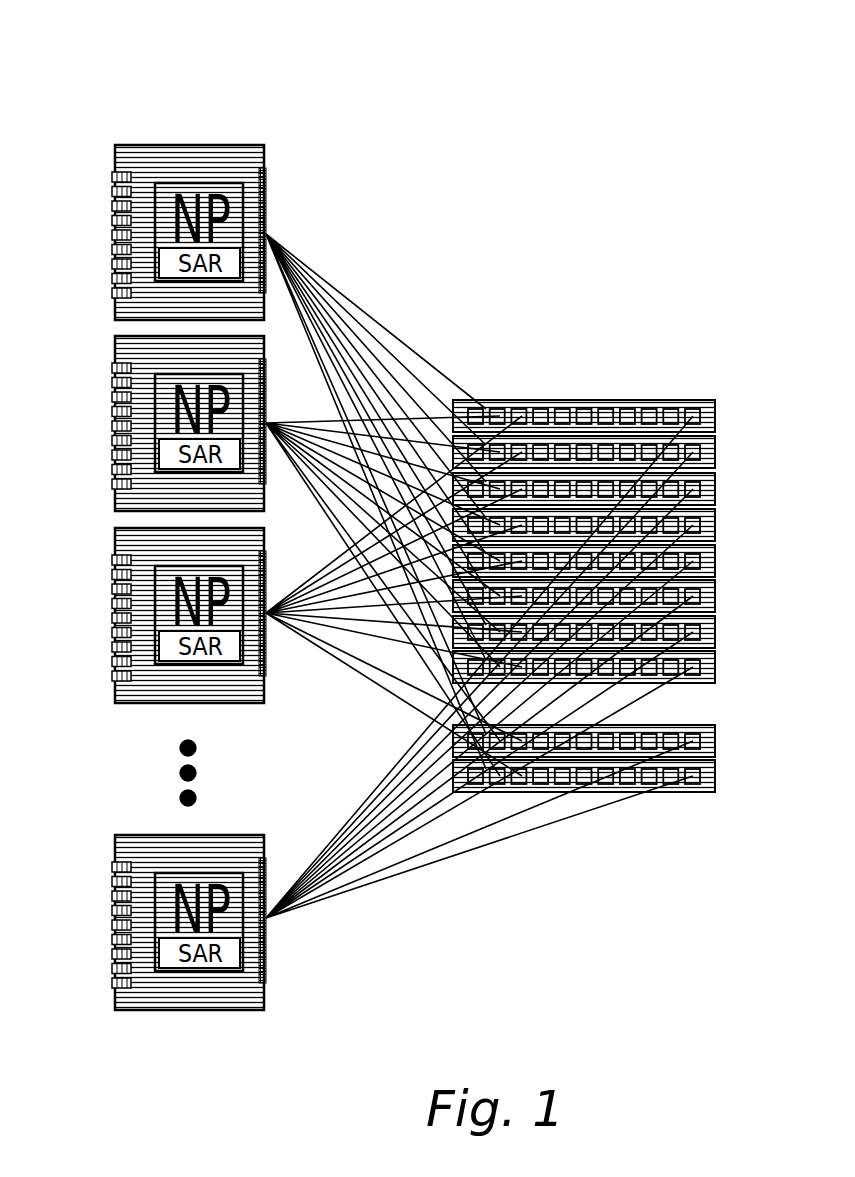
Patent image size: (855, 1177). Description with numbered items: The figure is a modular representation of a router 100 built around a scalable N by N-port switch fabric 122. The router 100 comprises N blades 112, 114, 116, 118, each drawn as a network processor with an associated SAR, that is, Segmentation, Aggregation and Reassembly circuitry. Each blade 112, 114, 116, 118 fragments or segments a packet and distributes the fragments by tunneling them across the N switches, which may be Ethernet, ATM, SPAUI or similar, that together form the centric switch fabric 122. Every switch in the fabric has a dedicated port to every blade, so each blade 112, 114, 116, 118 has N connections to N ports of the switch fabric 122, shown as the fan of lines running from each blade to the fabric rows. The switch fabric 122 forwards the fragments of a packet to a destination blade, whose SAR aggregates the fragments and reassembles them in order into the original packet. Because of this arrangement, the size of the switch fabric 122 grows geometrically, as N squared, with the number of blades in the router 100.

The router 100 is at (578, 123).
The blade 112 is at (107, 152).
The blade 114 is at (107, 343).
The blade 116 is at (107, 535).
The blade 118 is at (107, 843).
The switch fabric 122 is at (728, 448).